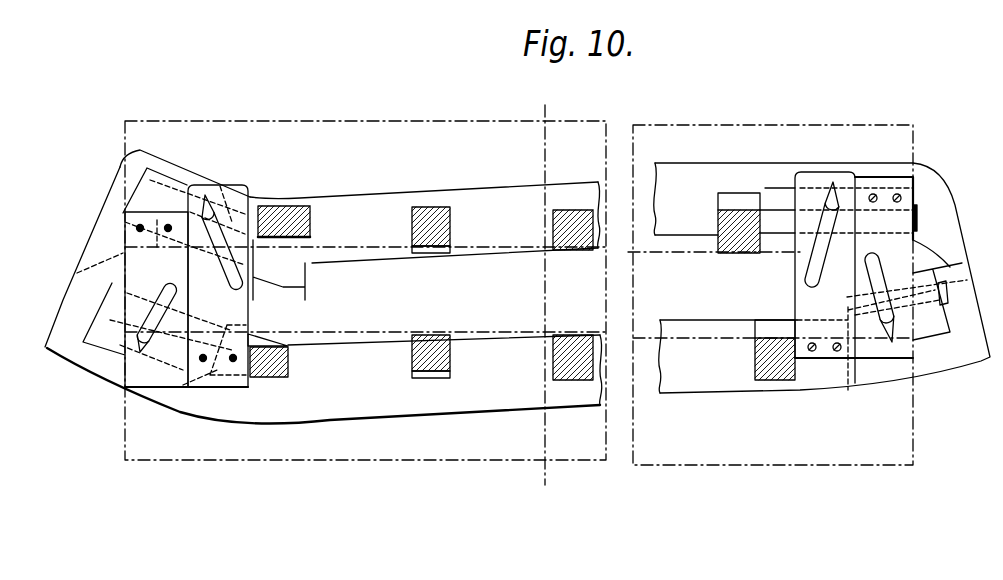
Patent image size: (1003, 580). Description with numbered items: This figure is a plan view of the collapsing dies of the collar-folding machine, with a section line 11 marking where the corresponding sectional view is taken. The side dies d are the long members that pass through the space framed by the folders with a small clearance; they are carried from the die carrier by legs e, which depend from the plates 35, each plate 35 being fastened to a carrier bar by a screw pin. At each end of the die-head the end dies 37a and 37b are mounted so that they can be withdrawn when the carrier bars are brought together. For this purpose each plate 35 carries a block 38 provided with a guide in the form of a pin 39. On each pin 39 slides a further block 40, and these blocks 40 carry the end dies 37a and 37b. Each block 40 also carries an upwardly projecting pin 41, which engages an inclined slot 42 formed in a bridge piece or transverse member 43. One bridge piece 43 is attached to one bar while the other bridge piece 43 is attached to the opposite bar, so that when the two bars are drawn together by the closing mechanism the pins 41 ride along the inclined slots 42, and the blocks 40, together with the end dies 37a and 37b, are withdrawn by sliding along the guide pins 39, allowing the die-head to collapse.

The section line 11— 11 is at (548, 116).
The plate 35 is at (593, 171).
The end die 37a is at (100, 215).
The end die 37b is at (77, 273).
The block 38 is at (257, 342).
The pin 39 is at (156, 299).
The block 40 is at (163, 180).
The upwardly projecting pin 41 is at (200, 222).
The inclined slot 42 is at (177, 288).
The bridge piece 43 is at (163, 392).
The side die d is at (391, 191).
The leg e is at (437, 250).